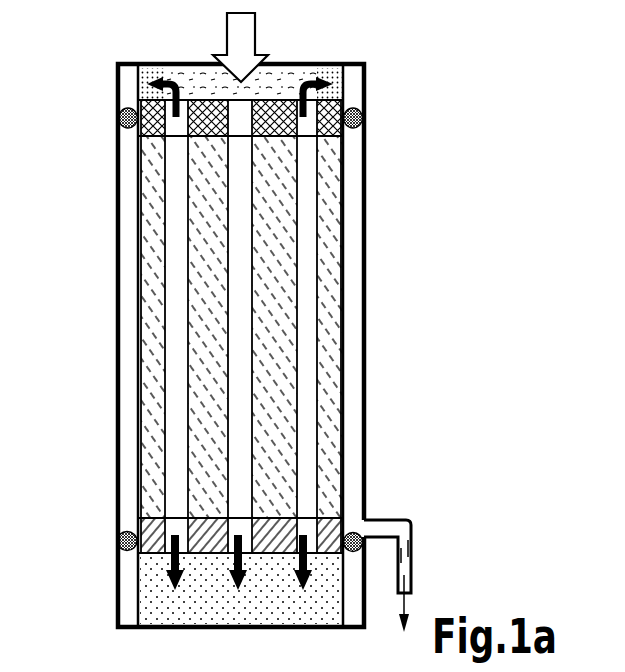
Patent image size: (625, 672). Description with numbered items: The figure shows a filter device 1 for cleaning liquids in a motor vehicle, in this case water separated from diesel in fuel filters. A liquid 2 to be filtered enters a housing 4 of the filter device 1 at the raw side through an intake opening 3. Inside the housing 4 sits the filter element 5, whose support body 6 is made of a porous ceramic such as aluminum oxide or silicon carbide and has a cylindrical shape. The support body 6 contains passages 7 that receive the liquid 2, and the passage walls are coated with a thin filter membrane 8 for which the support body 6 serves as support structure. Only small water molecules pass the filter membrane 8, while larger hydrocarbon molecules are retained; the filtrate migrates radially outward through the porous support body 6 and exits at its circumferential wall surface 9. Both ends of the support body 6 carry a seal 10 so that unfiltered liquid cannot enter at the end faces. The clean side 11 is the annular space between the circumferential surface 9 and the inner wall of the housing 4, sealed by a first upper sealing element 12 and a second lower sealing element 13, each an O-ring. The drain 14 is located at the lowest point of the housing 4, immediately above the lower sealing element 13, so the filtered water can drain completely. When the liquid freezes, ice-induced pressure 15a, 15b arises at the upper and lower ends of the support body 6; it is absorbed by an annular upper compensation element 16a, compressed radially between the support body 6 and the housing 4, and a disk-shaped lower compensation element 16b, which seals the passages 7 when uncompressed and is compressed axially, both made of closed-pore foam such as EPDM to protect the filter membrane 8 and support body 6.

The filter device 1 is at (285, 339).
The liquid to be filtered 2 is at (278, 77).
The intake opening 3 is at (206, 66).
The housing 4 is at (368, 158).
The filter element 5 is at (122, 316).
The support body 6 is at (150, 360).
The passages 7 is at (180, 231).
The filter membrane 8 is at (150, 188).
The circumferential wall surface 9 is at (352, 339).
The seal 10 is at (151, 136).
The clean side 11 is at (348, 405).
The first upper sealing element 12 is at (120, 97).
The second lower sealing element 13 is at (108, 543).
The drain 14 is at (384, 528).
The ice-induced pressure 15a is at (163, 70).
The ice-induced pressure 15b is at (173, 566).
The upper compensation element 16a is at (337, 74).
The lower compensation element 16b is at (164, 603).